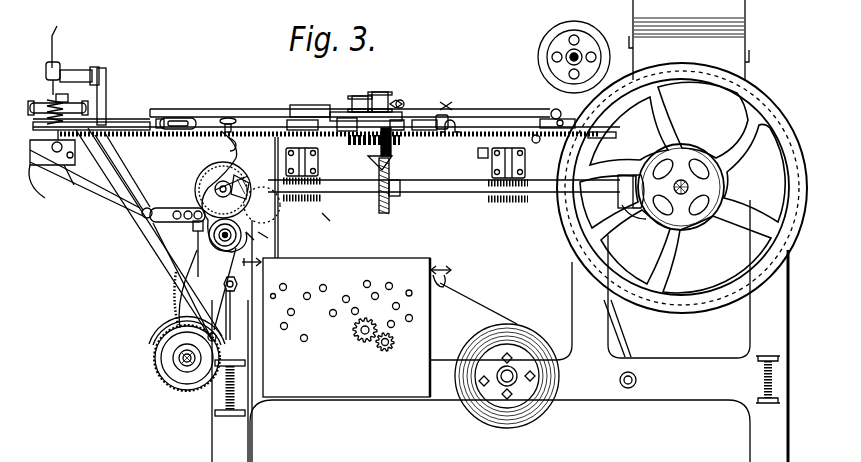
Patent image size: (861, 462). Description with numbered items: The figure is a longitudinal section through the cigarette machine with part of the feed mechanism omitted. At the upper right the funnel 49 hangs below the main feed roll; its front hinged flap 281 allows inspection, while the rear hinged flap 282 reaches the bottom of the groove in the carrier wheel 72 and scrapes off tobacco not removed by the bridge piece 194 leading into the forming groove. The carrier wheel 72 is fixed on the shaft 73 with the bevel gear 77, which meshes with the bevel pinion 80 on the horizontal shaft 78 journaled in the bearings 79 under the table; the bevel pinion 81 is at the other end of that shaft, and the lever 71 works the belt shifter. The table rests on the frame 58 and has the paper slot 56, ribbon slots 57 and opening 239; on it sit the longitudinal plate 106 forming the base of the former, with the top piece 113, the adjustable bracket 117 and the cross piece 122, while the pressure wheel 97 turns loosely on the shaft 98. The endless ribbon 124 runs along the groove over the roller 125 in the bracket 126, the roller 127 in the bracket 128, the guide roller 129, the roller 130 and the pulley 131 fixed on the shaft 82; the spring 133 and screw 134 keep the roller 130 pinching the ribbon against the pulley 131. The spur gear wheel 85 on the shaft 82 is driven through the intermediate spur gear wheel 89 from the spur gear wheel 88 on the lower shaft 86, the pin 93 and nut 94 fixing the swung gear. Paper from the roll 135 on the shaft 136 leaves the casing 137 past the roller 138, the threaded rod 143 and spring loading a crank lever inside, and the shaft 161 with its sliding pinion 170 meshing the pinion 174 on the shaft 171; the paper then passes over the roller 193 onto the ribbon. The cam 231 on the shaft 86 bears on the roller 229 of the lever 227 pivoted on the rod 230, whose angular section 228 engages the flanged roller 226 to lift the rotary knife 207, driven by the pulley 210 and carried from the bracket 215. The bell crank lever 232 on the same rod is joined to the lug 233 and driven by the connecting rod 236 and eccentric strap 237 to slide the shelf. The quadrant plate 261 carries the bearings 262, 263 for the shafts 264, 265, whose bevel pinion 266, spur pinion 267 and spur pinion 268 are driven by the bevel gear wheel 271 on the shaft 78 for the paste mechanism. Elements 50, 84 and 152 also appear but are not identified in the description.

The funnel 49 is at (746, 17).
The column band 50 is at (633, 21).
The paper slot 56 is at (453, 132).
The ribbon slots 57 is at (214, 137).
The frame 58 is at (108, 194).
The lever 71 is at (620, 333).
The carrier wheel 72 is at (762, 116).
The shaft 73 is at (682, 180).
The bevel gear 77 is at (698, 223).
The horizontal shaft 78 is at (465, 193).
The bearings 79 is at (304, 203).
The bevel pinion 80 is at (640, 210).
The bevel pinion 81 is at (245, 168).
The shaft 82 is at (276, 222).
The link 84 is at (262, 236).
The spur gear wheel 85 is at (323, 218).
The shaft 86 is at (182, 367).
The spur gear wheel 88 is at (160, 373).
The spur gear wheel 89 is at (170, 295).
The pin 93 is at (230, 296).
The nut 94 is at (239, 266).
The pressure wheel 97 is at (546, 38).
The shaft 98 is at (546, 57).
The longitudinal plate 106 is at (442, 116).
The top piece 113 is at (310, 103).
The bracket 117 is at (402, 122).
The cross piece 122 is at (450, 114).
The endless ribbon 124 is at (205, 113).
The roller 125 is at (576, 119).
The bracket 126 is at (537, 143).
The roller 127 is at (176, 118).
The bracket 128 is at (158, 120).
The guide roller 129 is at (467, 113).
The roller 130 is at (208, 240).
The pulley 131 is at (210, 178).
The spring 133 is at (230, 188).
The screw 134 is at (229, 118).
The roll of cigarette paper 135 is at (540, 410).
The shaft 136 is at (556, 398).
The casing 137 is at (335, 340).
The roller 138 is at (441, 284).
The threaded rod 143 is at (448, 267).
The link 152 is at (252, 237).
The shaft 161 is at (365, 336).
The pinion 170 is at (360, 329).
The shaft 171 is at (388, 350).
The pinion 174 is at (394, 342).
The roller 193 is at (480, 157).
The bridge piece 194 is at (553, 111).
The rotary knife 207 is at (56, 38).
The pulley 210 is at (78, 66).
The bracket 215 is at (106, 85).
The roller 226 is at (62, 168).
The lever 227 is at (82, 205).
The angular section 228 is at (67, 188).
The roller 229 is at (216, 340).
The rod 230 is at (143, 218).
The cam 231 is at (200, 370).
The bell crank lever 232 is at (130, 206).
The lug 233 is at (58, 160).
The connecting rod 236 is at (197, 253).
The eccentric strap 237 is at (167, 328).
The opening 239 is at (115, 123).
The plate 261 is at (337, 126).
The bearing 262 is at (392, 130).
The bearing 263 is at (355, 126).
The shaft 264 is at (378, 96).
The shaft 265 is at (360, 96).
The bevel pinion 266 is at (390, 200).
The spur pinion 267 is at (390, 152).
The spur pinion 268 is at (356, 147).
The bevel gear wheel 271 is at (391, 214).
The hinged flap 281 is at (635, 56).
The hinged flap 282 is at (747, 64).